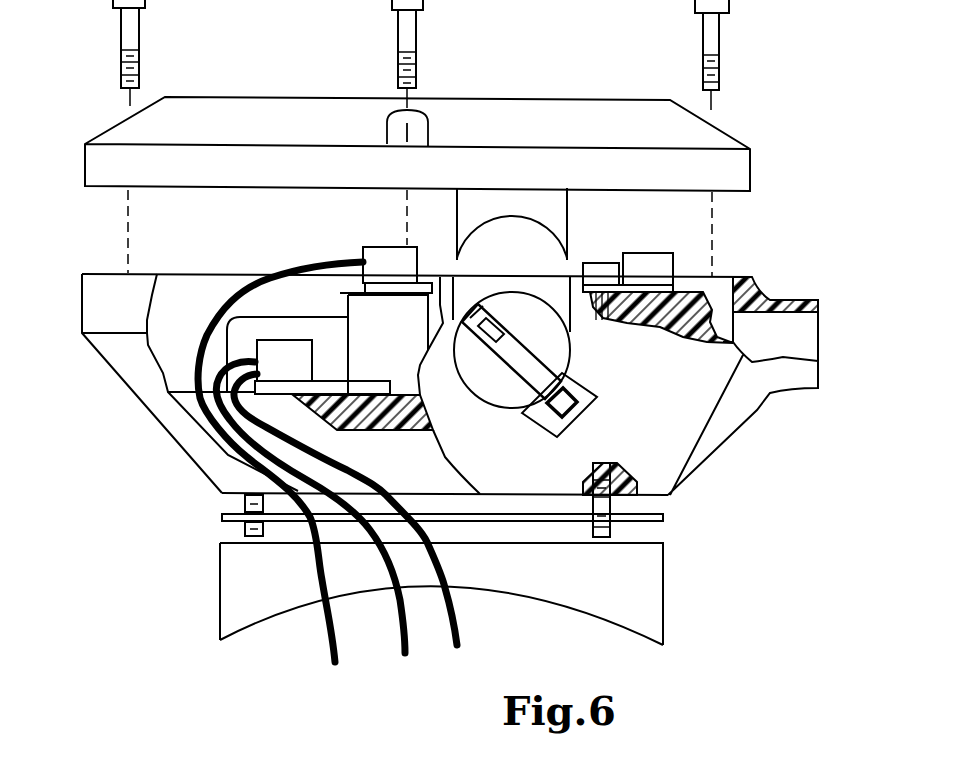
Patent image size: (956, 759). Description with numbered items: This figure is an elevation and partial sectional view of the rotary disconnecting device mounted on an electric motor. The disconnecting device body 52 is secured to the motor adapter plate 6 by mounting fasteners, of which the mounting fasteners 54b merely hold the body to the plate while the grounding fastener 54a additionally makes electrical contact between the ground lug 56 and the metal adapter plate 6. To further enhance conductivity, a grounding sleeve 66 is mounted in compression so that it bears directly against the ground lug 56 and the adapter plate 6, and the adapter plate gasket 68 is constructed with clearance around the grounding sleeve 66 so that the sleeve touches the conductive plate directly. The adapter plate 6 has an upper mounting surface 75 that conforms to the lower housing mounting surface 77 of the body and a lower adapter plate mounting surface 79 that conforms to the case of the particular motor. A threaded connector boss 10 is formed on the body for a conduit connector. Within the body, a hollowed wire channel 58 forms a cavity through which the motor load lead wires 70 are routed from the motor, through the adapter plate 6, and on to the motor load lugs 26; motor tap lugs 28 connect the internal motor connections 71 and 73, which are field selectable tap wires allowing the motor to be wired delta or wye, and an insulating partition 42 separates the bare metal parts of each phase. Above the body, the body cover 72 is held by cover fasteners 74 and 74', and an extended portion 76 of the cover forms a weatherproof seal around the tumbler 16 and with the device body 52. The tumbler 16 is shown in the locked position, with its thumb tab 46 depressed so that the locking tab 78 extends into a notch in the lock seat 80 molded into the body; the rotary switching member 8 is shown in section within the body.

The motor adapter plate 6 is at (220, 582).
The optical probe body 8 is at (503, 370).
The threaded connector boss 10 is at (802, 297).
The tumbler 16 is at (500, 413).
The load lug 26 is at (363, 245).
The motor tap lug 28 is at (313, 347).
The insulating partition 42 is at (272, 323).
The thumb tab 46 is at (500, 322).
The disconnecting device body 52 is at (157, 420).
The grounding fastener 54a is at (598, 262).
The mounting fastener 54b is at (244, 505).
The ground lug 56 is at (645, 253).
The wire channel 58 is at (433, 480).
The grounding sleeve 66 is at (622, 503).
The adapter plate gasket 68 is at (230, 520).
The motor load lead wire 70 is at (195, 325).
The internal motor connection 71 is at (400, 627).
The body cover 72 is at (752, 168).
The internal motor connection 73 is at (470, 614).
The cover fastener 74 is at (140, 53).
The cover fastener 74' is at (573, 55).
The upper mounting surface 75 is at (520, 547).
The extended portion of the cover 76 is at (532, 216).
The lower housing mounting surface 77 is at (520, 492).
The locking tab 78 is at (545, 428).
The lower adapter plate mounting surface 79 is at (565, 607).
The lock seat 80 is at (592, 391).